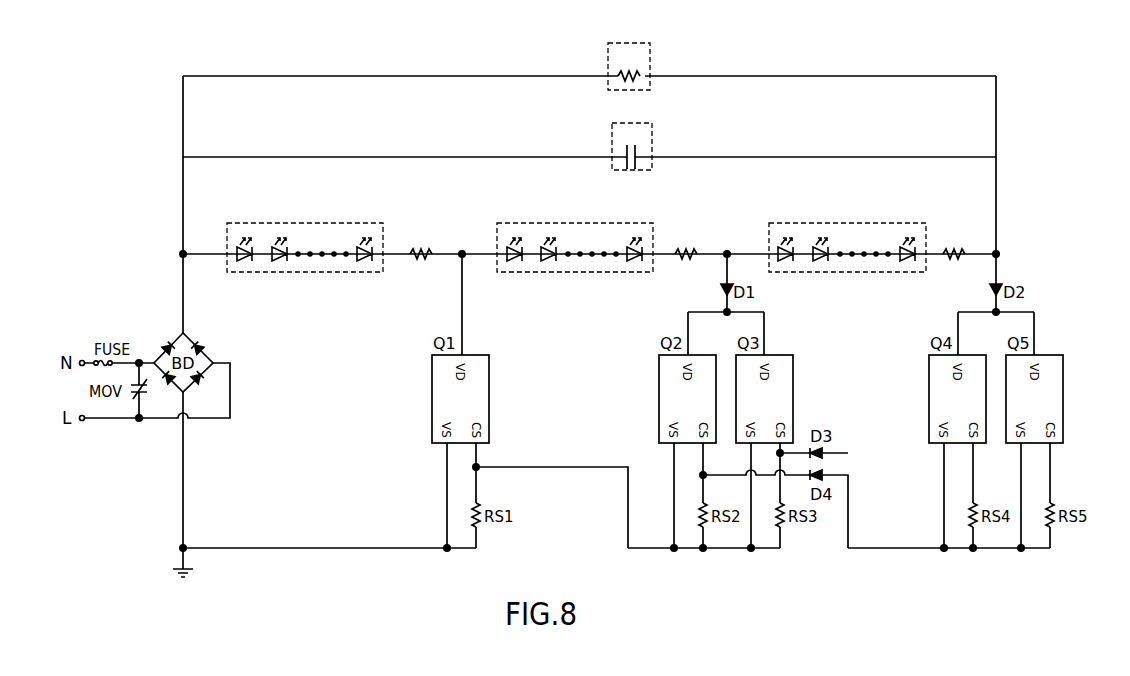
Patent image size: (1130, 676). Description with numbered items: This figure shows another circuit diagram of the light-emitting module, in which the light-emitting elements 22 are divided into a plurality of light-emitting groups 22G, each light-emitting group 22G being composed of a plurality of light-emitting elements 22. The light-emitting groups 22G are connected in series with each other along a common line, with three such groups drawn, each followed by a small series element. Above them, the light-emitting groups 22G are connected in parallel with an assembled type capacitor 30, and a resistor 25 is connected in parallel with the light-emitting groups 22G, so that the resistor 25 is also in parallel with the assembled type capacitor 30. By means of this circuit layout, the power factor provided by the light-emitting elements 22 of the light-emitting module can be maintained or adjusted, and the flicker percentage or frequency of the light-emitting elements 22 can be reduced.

The resistor 25 is at (652, 54).
The assembled type capacitor 30 is at (654, 134).
The light-emitting group 22G is at (841, 222).
The light-emitting element 22 is at (908, 285).